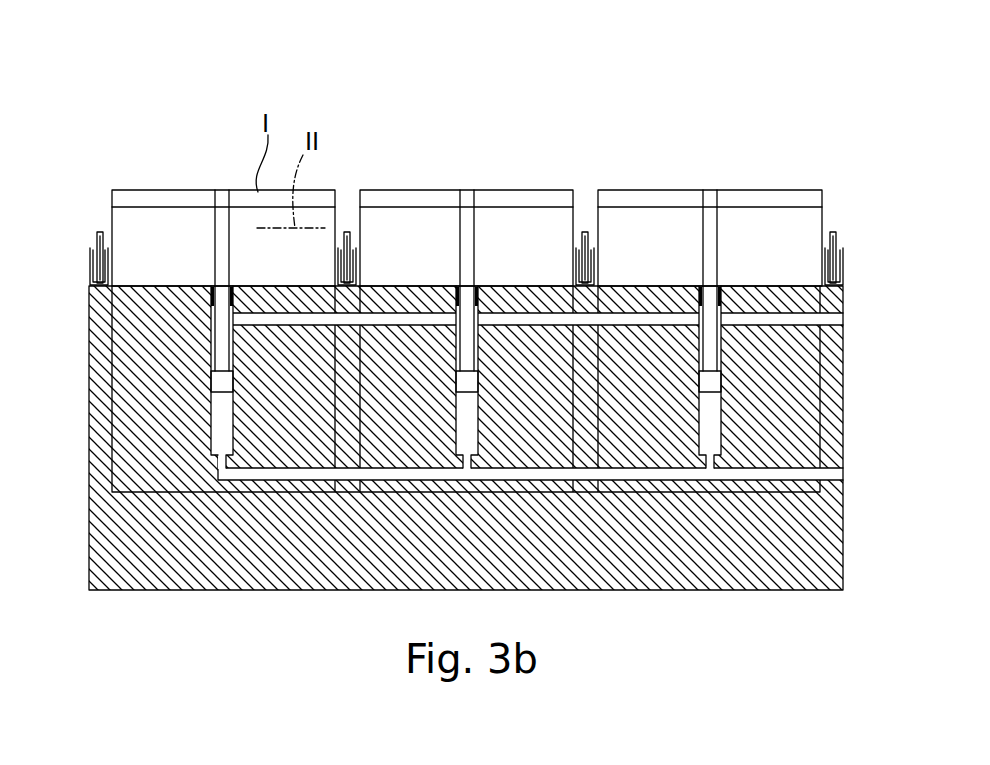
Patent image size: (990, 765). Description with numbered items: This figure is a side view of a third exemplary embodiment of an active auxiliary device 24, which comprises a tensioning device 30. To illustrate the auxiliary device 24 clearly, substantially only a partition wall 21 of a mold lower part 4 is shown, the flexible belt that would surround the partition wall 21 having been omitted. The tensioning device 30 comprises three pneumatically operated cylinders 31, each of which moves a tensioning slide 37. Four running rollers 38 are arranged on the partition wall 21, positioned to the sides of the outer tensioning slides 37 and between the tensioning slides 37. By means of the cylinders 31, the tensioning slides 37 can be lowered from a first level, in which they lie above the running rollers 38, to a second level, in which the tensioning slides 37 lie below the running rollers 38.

The mold lower part 4 is at (842, 140).
The partition wall 21 is at (887, 167).
The active auxiliary device 24 is at (708, 422).
The tensioning device 30 is at (708, 422).
The pneumatically operated cylinder 31 is at (227, 417).
The tensioning slide 37 is at (183, 195).
The running roller 38 is at (96, 240).